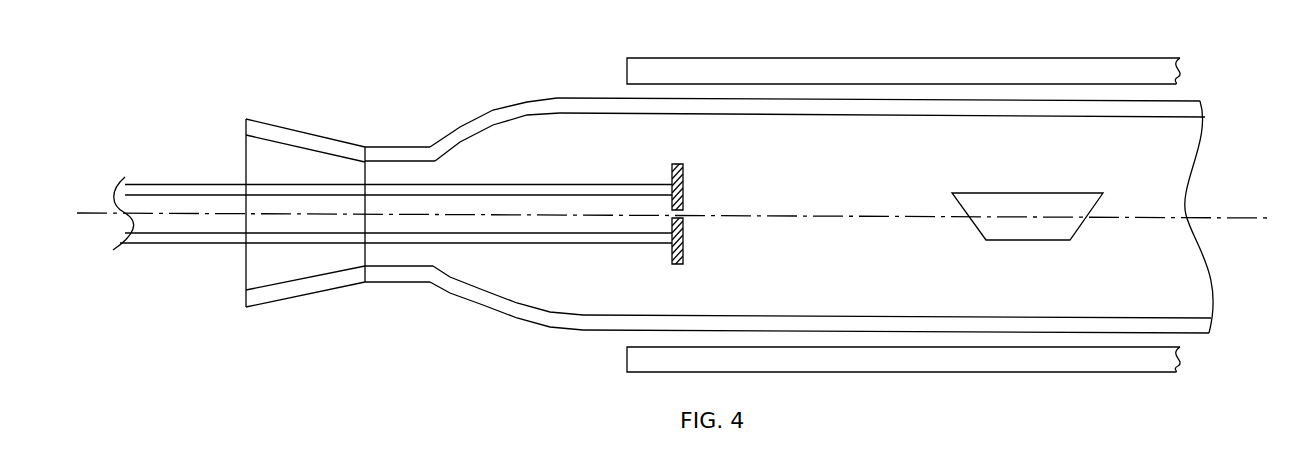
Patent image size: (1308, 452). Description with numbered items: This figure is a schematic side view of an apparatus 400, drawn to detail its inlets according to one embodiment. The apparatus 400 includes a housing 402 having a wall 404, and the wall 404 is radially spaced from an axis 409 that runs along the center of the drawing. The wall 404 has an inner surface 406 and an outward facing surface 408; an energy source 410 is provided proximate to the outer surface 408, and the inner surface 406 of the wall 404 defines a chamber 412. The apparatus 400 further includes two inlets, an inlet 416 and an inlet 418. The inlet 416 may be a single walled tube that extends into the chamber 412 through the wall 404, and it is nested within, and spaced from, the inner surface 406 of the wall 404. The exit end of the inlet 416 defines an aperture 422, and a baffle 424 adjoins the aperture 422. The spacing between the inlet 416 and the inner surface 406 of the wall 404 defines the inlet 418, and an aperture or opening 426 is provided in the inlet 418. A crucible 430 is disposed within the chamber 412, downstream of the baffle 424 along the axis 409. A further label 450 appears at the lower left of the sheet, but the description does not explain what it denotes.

The apparatus 400 is at (255, 62).
The housing 402 is at (789, 203).
The wall 404 is at (800, 105).
The inner surface 406 is at (596, 113).
The outward facing surface 408 is at (548, 98).
The axis 409 is at (1262, 218).
The energy source 410 is at (627, 70).
The chamber 412 is at (508, 287).
The inlet 416 is at (153, 222).
The inlet 418 is at (278, 206).
The aperture 422 is at (683, 213).
The baffle 424 is at (683, 247).
The aperture or opening 426 is at (363, 173).
The crucible 430 is at (980, 191).
The distal region 450 is at (233, 430).